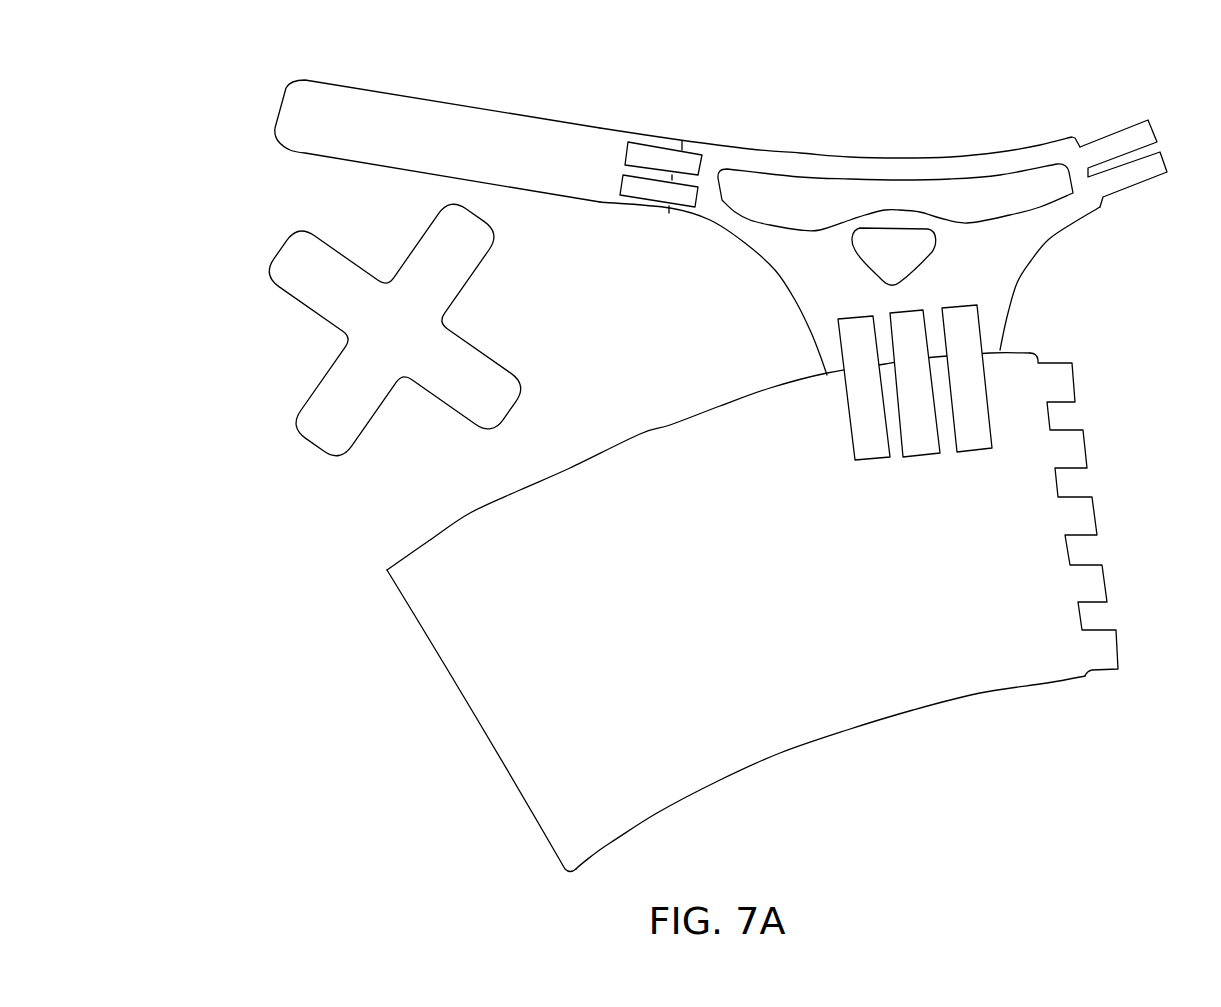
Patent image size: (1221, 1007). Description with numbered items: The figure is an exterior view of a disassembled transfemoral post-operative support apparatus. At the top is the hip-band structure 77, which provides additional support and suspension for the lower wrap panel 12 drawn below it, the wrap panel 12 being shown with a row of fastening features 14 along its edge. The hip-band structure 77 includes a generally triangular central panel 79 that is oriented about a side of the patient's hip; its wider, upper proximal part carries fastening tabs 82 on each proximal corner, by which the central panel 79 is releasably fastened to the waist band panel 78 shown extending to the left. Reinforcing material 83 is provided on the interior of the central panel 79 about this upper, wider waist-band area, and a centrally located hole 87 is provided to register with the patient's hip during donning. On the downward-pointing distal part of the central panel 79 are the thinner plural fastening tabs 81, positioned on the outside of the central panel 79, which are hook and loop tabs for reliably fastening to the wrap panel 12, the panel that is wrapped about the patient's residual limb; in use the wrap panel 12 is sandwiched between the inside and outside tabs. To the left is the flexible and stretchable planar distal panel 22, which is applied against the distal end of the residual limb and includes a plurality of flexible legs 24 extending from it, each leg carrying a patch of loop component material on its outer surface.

The lower wrap panel 12 is at (648, 797).
The teeth 14 is at (1060, 384).
The distal panel 22 is at (402, 329).
The flexible legs 24 is at (477, 243).
The hip-band structure 77 is at (783, 96).
The waist band panel 78 is at (445, 118).
The central panel 79 is at (810, 265).
The fastening tabs 81 is at (910, 332).
The fastening tabs 82 is at (652, 157).
The reinforcing material 83 is at (990, 190).
The hole 87 is at (881, 232).